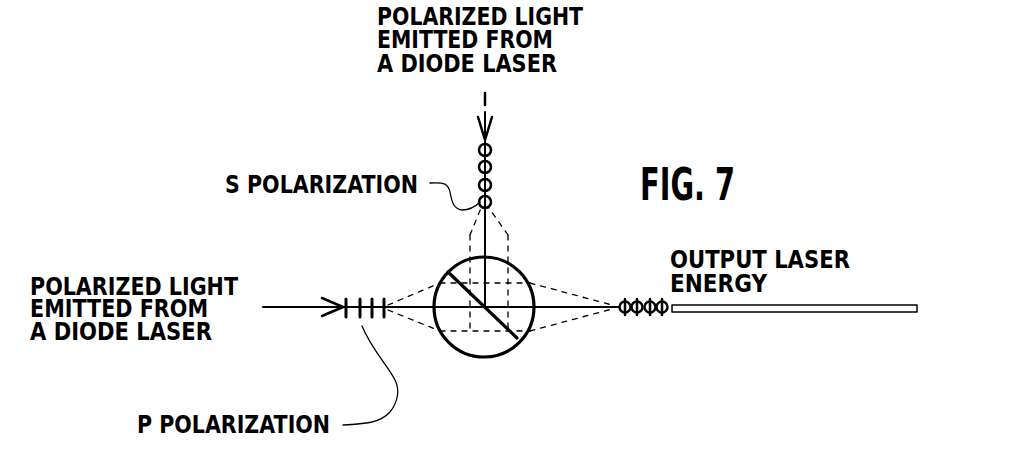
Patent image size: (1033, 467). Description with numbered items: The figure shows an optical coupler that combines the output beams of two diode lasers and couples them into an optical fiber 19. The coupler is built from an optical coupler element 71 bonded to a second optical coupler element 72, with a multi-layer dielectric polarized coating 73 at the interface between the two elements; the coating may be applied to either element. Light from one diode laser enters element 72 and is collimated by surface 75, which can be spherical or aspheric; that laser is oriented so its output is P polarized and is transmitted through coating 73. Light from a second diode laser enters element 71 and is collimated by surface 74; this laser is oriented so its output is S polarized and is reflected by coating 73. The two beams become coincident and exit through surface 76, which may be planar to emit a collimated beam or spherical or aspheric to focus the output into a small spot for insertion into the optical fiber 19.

The optical fiber 19 is at (803, 314).
The optical coupler element 71 is at (517, 270).
The optical coupler element 72 is at (487, 357).
The multi-layer dielectric polarized coating 73 is at (523, 332).
The surface 74 is at (482, 252).
The surface 75 is at (428, 316).
The surface 76 is at (533, 300).